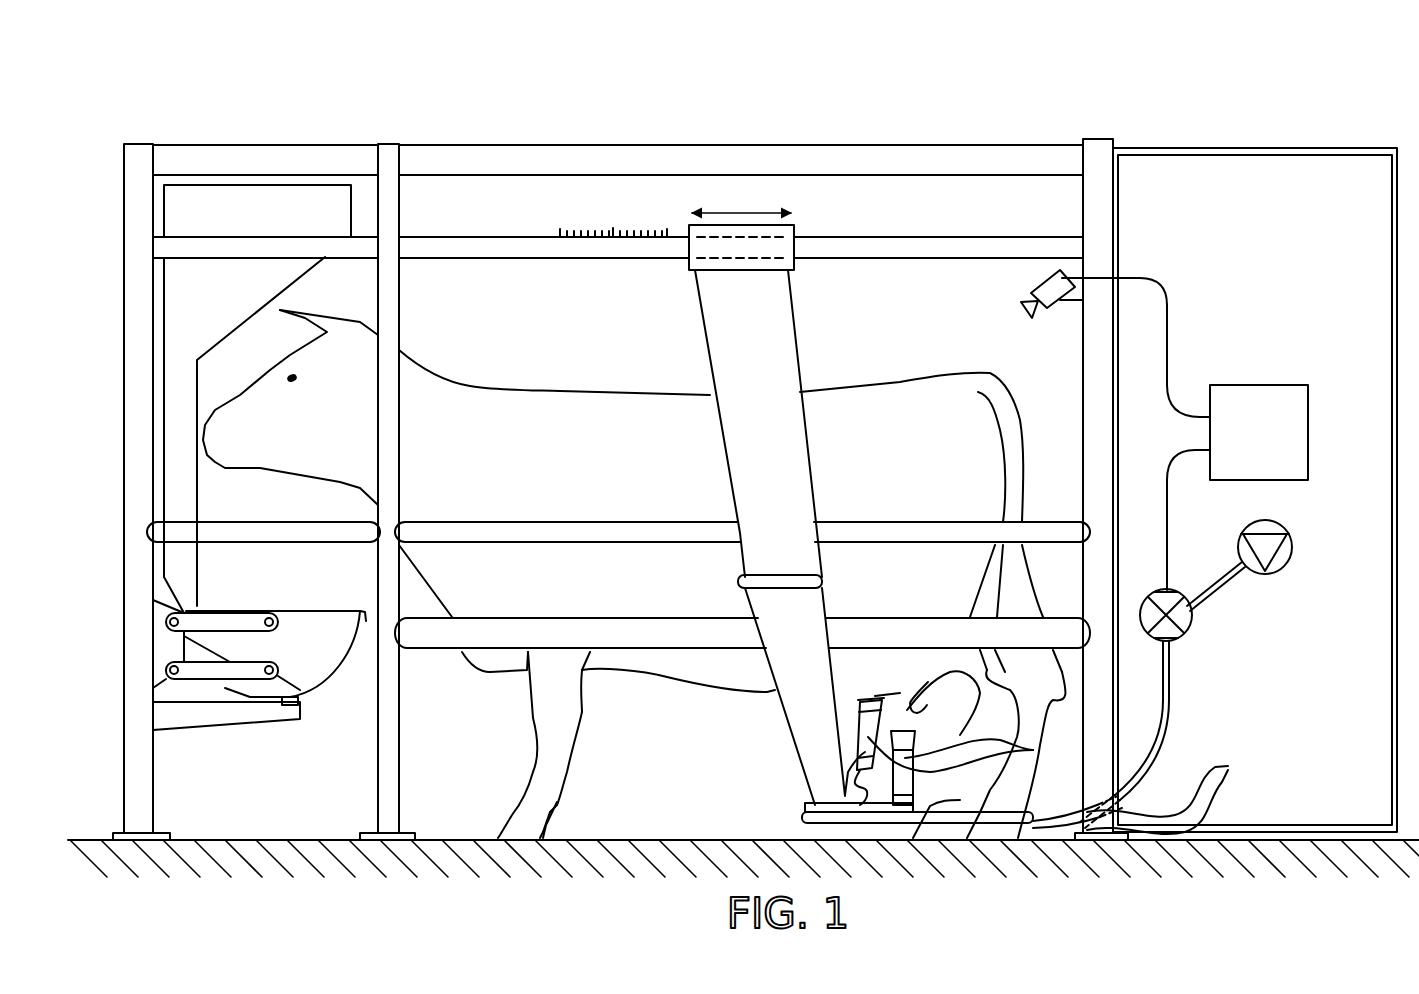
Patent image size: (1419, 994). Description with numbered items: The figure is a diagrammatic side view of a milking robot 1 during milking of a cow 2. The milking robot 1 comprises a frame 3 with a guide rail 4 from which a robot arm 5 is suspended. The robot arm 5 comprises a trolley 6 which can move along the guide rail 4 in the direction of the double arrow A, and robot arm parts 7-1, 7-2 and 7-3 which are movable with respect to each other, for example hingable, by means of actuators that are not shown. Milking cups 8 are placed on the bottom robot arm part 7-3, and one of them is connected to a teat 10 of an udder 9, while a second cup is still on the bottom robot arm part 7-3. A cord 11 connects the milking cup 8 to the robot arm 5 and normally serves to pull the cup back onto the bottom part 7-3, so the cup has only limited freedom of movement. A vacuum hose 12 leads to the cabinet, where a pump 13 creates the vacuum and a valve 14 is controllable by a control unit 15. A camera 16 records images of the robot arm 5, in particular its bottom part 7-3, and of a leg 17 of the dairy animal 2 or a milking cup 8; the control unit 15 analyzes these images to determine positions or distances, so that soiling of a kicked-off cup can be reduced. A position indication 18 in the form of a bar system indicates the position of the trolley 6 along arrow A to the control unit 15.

The milking robot 1 is at (977, 108).
The cow 2 is at (548, 436).
The frame 3 is at (470, 161).
The guide rail 4 is at (481, 247).
The robot arm 5 is at (834, 354).
The trolley 6 is at (793, 247).
The robot arm part 7-1 is at (707, 343).
The robot arm part 7-2 is at (778, 633).
The bottom robot arm part 7-3 is at (832, 808).
The milking cups 8 is at (1030, 750).
The udder 9 is at (892, 684).
The teat 10 is at (917, 703).
The cord 11 is at (863, 788).
The vacuum hose 12 is at (1175, 793).
The pump 13 is at (1287, 558).
The valve 14 is at (1189, 626).
The control unit 15 is at (1258, 385).
The camera 16 is at (1052, 289).
The leg 17 is at (967, 797).
The position indication 18 is at (582, 237).